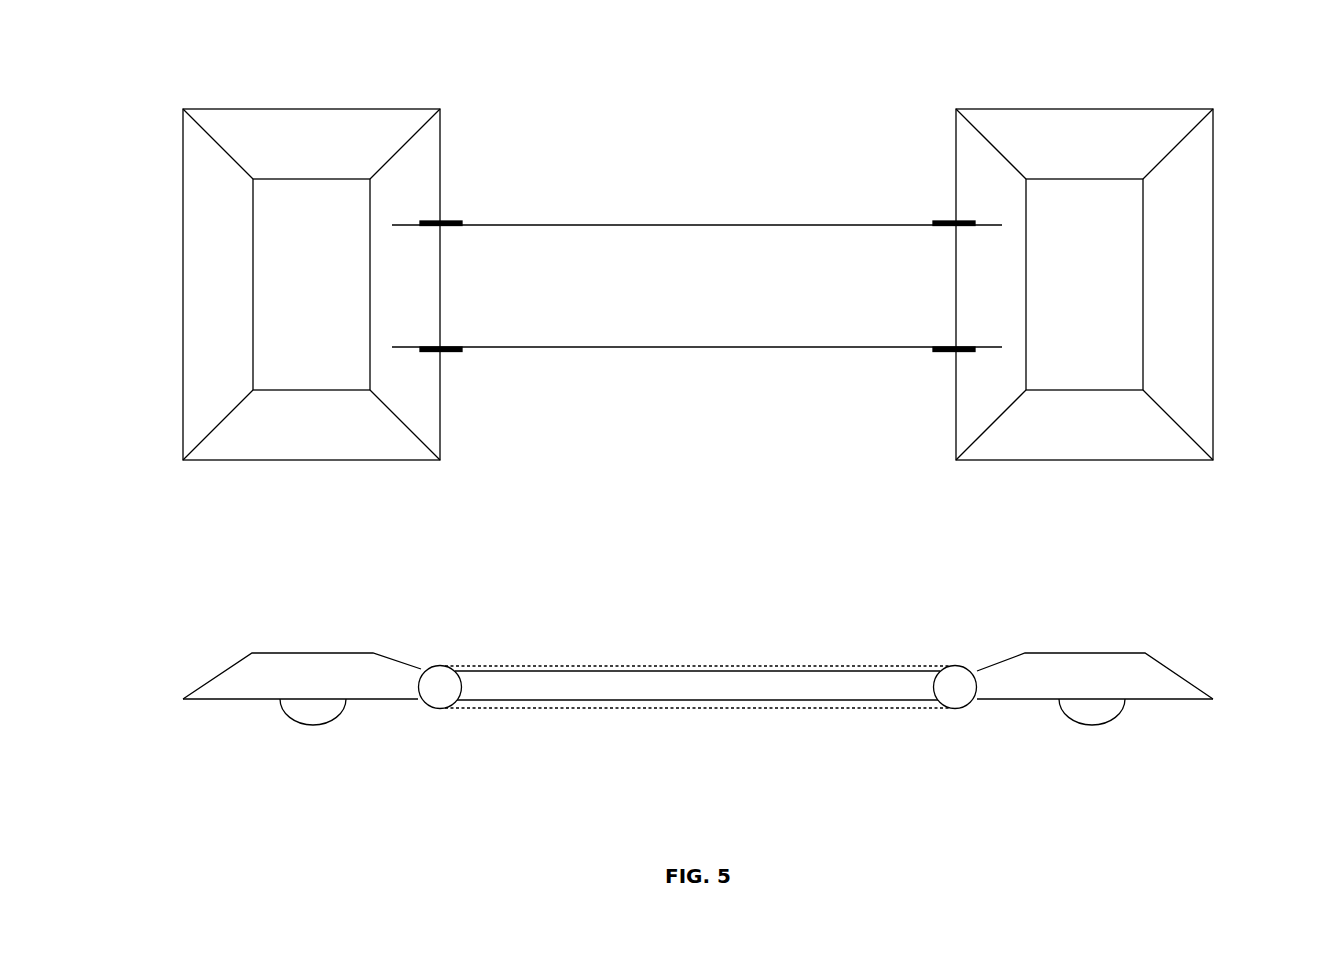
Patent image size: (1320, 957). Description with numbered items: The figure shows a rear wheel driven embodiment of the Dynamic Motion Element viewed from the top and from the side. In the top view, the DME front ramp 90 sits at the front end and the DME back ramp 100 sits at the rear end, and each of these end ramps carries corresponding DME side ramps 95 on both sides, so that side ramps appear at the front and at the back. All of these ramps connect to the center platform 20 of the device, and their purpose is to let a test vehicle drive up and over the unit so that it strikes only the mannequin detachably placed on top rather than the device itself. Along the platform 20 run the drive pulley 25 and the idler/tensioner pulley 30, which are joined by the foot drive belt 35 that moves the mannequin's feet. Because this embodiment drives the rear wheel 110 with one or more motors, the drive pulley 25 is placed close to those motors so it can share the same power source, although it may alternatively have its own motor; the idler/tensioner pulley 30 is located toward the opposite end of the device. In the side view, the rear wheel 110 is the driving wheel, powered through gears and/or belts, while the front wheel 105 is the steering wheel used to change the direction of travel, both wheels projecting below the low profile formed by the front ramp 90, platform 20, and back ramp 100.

The platform 20 is at (710, 257).
The drive pulley 25 is at (956, 347).
The idler/tensioner pulley 30 is at (440, 347).
The foot drive belt 35 is at (705, 666).
The DME front ramp 90 is at (202, 322).
The DME side ramp 95 is at (313, 139).
The DME back ramp 100 is at (1188, 277).
The front wheel (steering) 105 is at (322, 725).
The rear wheel (driven) 110 is at (1092, 725).